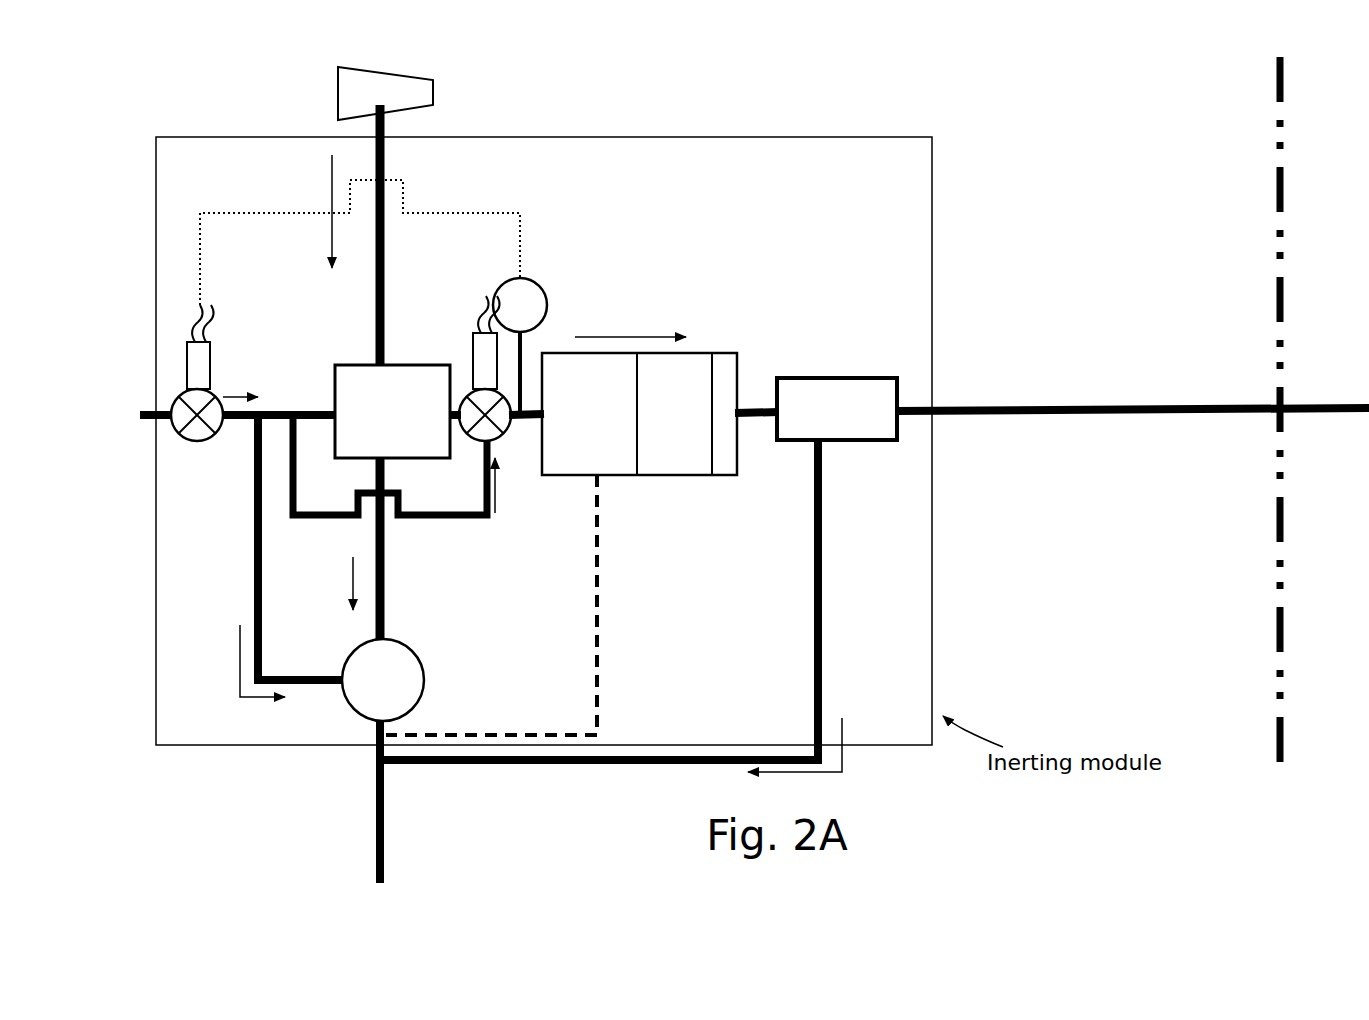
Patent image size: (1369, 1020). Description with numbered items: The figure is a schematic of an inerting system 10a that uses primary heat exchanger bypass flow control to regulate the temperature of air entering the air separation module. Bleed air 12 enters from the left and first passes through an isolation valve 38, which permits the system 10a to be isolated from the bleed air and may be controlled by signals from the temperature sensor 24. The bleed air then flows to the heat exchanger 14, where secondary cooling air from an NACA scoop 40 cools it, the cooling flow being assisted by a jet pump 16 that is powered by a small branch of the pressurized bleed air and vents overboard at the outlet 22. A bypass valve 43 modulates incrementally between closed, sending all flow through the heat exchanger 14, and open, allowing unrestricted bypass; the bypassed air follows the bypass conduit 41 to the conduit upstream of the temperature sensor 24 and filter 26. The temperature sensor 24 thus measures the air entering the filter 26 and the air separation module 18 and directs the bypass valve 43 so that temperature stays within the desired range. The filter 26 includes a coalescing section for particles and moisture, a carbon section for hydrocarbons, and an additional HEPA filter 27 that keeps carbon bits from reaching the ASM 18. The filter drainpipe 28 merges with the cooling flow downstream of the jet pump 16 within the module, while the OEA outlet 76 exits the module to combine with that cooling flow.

The system 10a is at (962, 93).
The bleed air 12 is at (125, 515).
The heat exchanger 14 is at (420, 458).
The jet pump 16 is at (424, 672).
The air separation module 18 is at (823, 378).
The outlet 22 is at (390, 810).
The temperature sensor 24 is at (522, 293).
The filter 26 is at (708, 322).
The HEPA filter 27 is at (717, 477).
The filter drainpipe 28 is at (598, 532).
The isolation valve 38 is at (215, 448).
The NACA scoop 40 is at (405, 73).
The bypass conduit 41 is at (345, 520).
The bypass valve 43 is at (503, 441).
The OEA outlet 76 is at (613, 765).